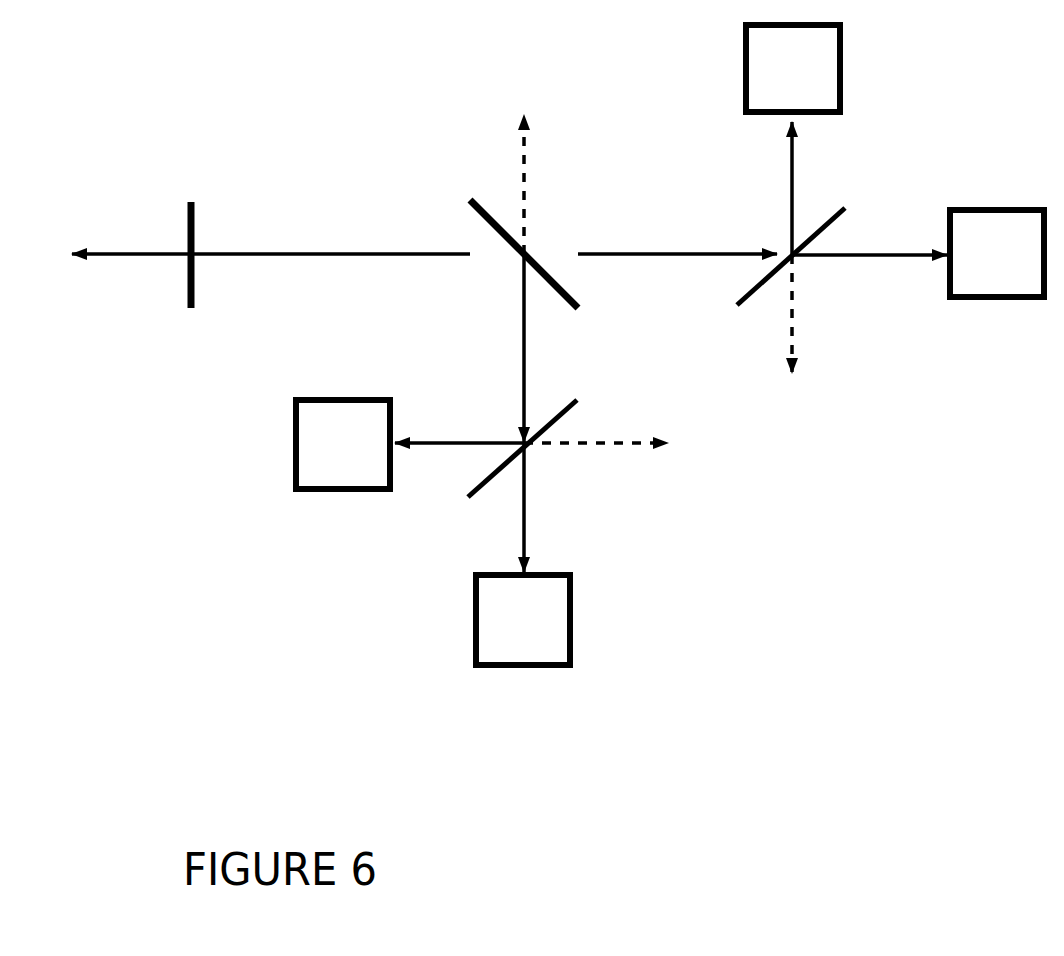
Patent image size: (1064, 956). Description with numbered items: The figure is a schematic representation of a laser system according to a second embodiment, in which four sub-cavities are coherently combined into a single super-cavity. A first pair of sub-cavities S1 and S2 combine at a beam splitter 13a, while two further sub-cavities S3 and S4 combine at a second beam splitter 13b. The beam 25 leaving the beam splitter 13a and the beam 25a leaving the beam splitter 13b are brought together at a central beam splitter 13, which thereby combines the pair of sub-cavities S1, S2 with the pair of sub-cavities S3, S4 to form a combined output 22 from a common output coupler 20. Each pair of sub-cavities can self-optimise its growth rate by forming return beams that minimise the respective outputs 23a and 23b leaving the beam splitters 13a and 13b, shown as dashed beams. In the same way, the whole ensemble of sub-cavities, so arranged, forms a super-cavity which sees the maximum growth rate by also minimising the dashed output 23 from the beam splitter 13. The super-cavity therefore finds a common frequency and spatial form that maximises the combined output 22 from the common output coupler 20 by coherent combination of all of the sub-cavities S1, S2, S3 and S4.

The beam splitter 13 is at (465, 196).
The beam splitter 13a is at (735, 297).
The beam splitter 13b is at (593, 415).
The common output coupler 20 is at (192, 193).
The combined output 22 is at (97, 232).
The output 23 is at (540, 182).
The output 23a is at (795, 337).
The output 23b is at (617, 448).
The light beam 25 is at (643, 247).
The transmitted light beam 25a is at (505, 356).
The sub-cavity S1 is at (1018, 190).
The sub-cavity S2 is at (862, 77).
The sub-cavity S3 is at (575, 618).
The sub-cavity S4 is at (337, 500).